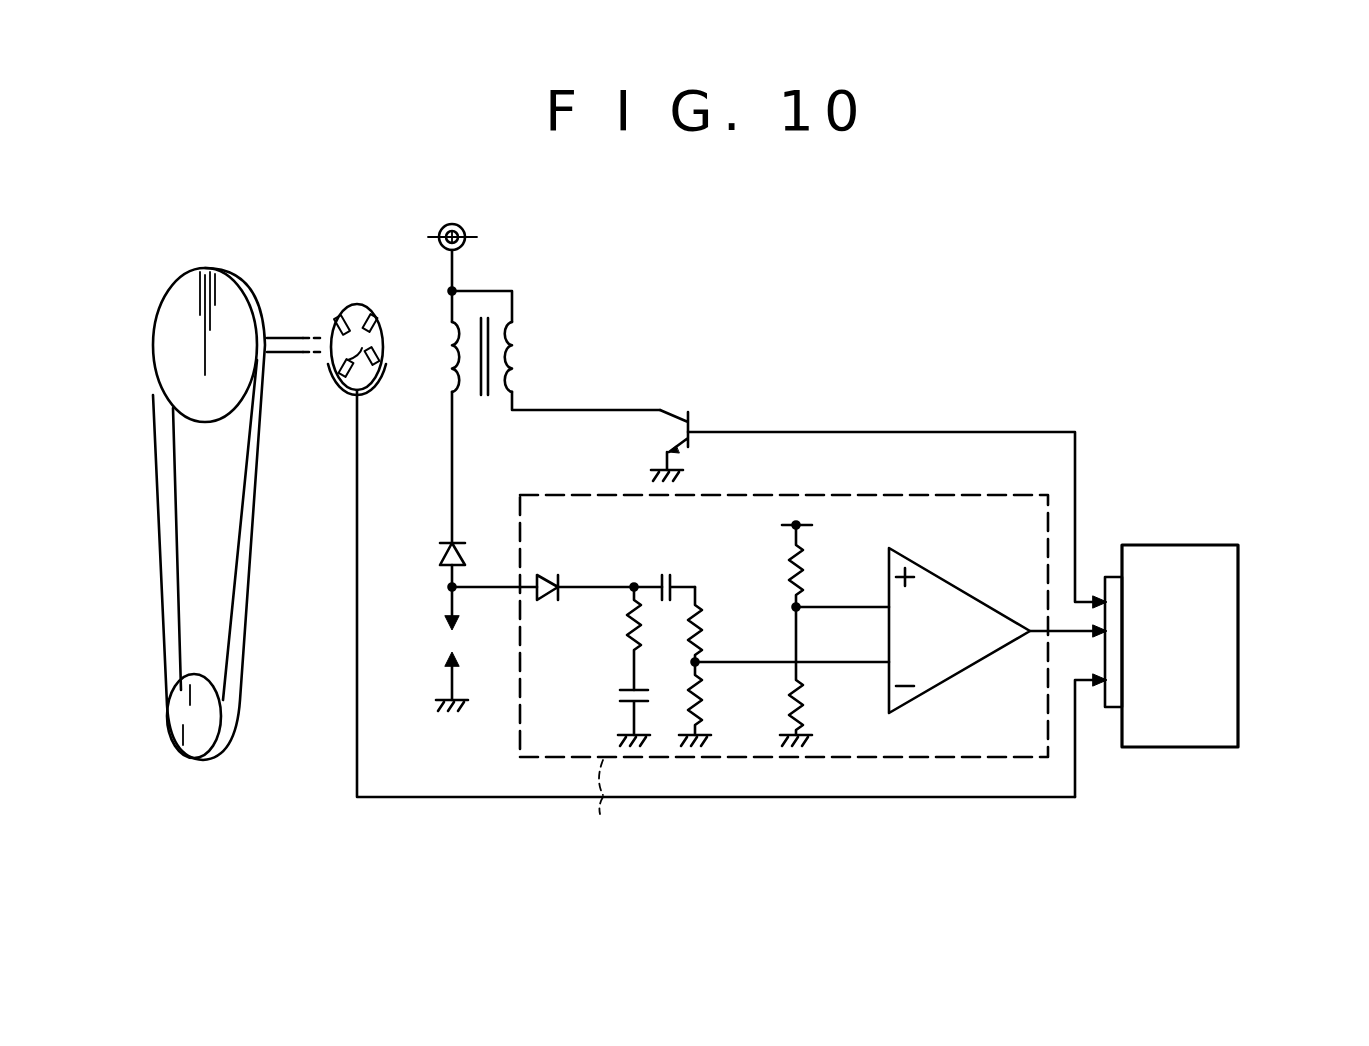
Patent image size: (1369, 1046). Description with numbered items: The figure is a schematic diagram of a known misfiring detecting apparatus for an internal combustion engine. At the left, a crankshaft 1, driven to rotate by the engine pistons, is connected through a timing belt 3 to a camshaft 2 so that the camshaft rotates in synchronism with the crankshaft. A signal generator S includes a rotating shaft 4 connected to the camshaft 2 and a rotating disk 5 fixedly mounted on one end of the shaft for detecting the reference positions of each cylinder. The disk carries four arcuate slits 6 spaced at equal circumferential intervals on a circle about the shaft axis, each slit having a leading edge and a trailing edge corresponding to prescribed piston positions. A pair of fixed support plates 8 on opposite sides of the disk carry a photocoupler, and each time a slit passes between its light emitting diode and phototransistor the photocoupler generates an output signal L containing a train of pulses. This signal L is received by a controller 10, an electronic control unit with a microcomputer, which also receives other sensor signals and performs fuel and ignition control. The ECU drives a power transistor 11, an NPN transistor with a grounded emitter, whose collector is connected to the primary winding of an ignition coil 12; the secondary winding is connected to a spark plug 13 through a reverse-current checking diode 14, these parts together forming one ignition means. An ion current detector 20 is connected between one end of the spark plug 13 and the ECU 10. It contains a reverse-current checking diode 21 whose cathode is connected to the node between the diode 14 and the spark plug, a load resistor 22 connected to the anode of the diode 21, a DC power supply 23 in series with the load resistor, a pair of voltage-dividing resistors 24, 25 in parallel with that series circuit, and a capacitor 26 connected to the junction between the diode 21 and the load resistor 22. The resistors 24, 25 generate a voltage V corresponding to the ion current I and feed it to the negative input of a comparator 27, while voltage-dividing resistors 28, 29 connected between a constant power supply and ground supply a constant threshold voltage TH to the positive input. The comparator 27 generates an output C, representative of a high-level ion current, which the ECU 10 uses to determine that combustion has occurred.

The crankshaft 1 is at (195, 743).
The camshaft 2 is at (202, 270).
The timing belt 3 is at (162, 568).
The rotating shaft 4 is at (315, 336).
The rotating disk 5 is at (360, 305).
The arcuate slits 6 is at (375, 332).
The fixed support plates 8 is at (379, 384).
The signal generator S is at (333, 388).
The output signal L is at (356, 508).
The controller 10 is at (1153, 545).
The power transistor 11 is at (665, 432).
The ignition coil 12 is at (522, 347).
The spark plug 13 is at (448, 637).
The reverse-current checking diode 14 is at (466, 556).
The ion current I is at (465, 602).
The ion current detector 20 is at (745, 495).
The reverse-current checking diode 21 is at (542, 575).
The load resistor 22 is at (627, 633).
The DC power supply 23 is at (617, 693).
The voltage-dividing resistor 24 is at (700, 613).
The voltage-dividing resistor 25 is at (702, 700).
The capacitor 26 is at (665, 578).
The comparator 27 is at (940, 688).
The voltage-dividing resistor 28 is at (802, 578).
The voltage-dividing resistor 29 is at (803, 690).
The threshold voltage TH is at (808, 608).
The voltage V is at (727, 663).
The output C is at (1068, 633).